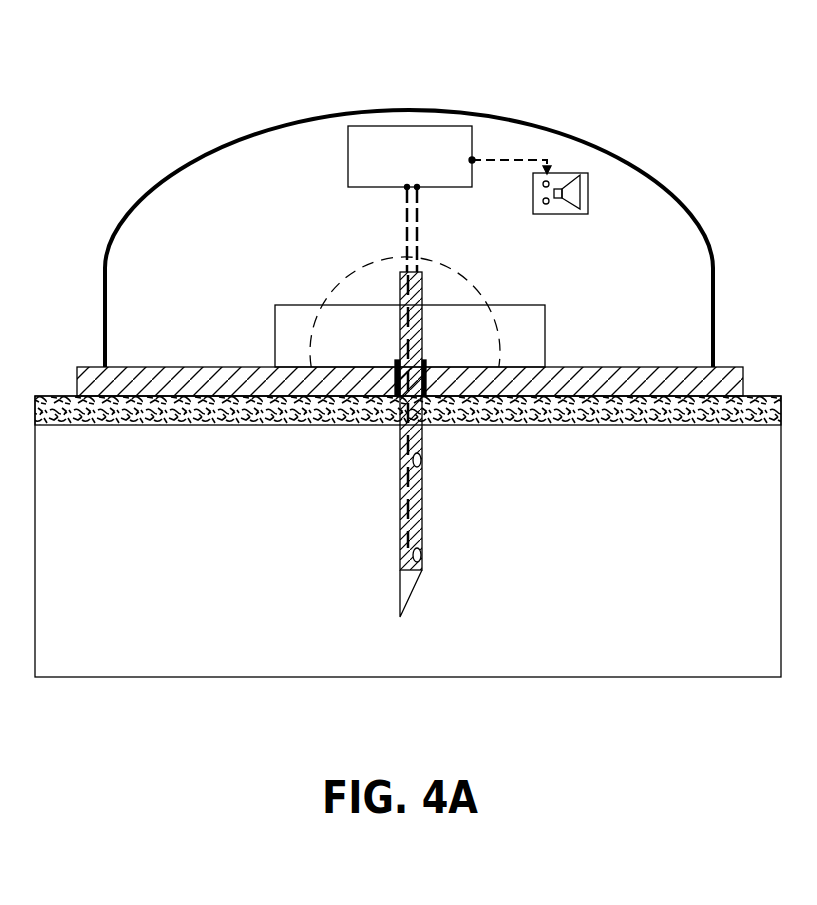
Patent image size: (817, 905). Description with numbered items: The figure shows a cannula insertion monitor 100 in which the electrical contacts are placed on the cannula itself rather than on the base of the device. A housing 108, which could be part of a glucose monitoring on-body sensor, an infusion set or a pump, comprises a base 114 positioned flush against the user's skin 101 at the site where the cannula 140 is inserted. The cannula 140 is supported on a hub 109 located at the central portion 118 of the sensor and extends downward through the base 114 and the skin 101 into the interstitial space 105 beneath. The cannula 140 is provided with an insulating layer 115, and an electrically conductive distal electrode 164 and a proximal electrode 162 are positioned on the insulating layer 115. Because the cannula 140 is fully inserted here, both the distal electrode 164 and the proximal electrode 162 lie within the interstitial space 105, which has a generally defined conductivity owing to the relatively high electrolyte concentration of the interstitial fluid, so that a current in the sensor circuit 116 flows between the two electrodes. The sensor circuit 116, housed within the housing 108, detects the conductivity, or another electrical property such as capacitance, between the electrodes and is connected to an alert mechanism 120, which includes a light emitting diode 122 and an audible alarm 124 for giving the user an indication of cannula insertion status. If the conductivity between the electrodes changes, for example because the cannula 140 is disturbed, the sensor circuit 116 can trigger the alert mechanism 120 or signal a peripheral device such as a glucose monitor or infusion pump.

The insertion monitor 100 is at (657, 142).
The skin 101 is at (47, 397).
The interstitial space 105 is at (190, 587).
The housing 108 is at (177, 173).
The hub 109 is at (521, 345).
The base 114 is at (183, 380).
The insulating layer 115 is at (417, 510).
The sensor circuit 116 is at (430, 140).
The central portion 118 is at (458, 272).
The alert mechanism 120 is at (602, 245).
The light emitting diode 122 is at (547, 205).
The audible alarm 124 is at (577, 195).
The cannula 140 is at (407, 582).
The proximal electrode 162 is at (421, 462).
The distal electrode 164 is at (421, 557).